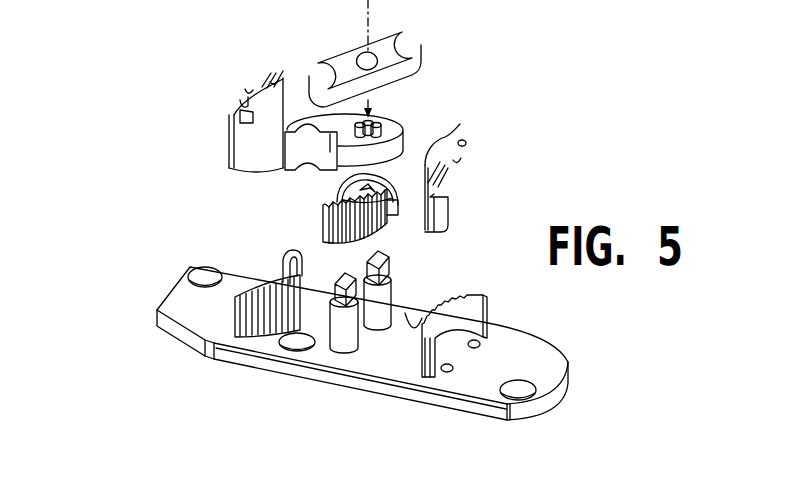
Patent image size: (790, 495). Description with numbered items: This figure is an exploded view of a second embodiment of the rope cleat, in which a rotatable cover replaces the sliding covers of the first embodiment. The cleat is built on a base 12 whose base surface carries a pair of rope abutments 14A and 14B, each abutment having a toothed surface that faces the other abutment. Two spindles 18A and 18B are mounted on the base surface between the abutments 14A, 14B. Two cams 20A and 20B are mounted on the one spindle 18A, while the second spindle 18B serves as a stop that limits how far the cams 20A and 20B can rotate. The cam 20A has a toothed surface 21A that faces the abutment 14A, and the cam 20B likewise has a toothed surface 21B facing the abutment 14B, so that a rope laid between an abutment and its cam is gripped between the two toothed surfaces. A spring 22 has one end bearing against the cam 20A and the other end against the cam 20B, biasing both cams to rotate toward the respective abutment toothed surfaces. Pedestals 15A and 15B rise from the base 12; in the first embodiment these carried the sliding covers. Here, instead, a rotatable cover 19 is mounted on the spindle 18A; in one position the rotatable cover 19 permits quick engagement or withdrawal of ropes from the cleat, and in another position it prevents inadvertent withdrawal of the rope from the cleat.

The base 12 is at (157, 313).
The rope abutment 14A is at (420, 368).
The rope abutment 14B is at (250, 325).
The pedestal 15A is at (460, 124).
The pedestal 15B is at (247, 147).
The spindle 18A is at (382, 293).
The spindle 18B is at (343, 347).
The rotatable cover 19 is at (414, 72).
The cam 20A is at (330, 223).
The cam 20B is at (388, 138).
The toothed surface 21A is at (368, 228).
The second cam member 21B is at (285, 172).
The spring 22 is at (373, 125).